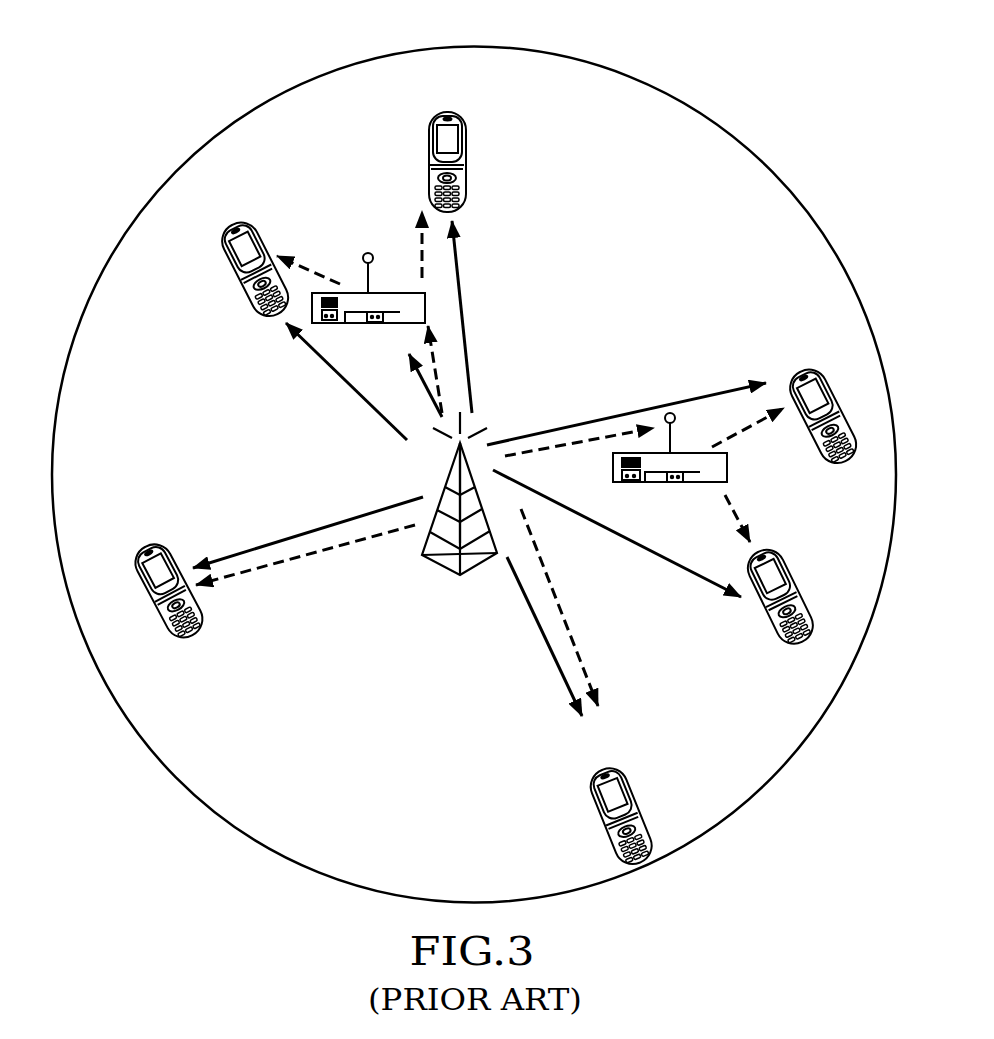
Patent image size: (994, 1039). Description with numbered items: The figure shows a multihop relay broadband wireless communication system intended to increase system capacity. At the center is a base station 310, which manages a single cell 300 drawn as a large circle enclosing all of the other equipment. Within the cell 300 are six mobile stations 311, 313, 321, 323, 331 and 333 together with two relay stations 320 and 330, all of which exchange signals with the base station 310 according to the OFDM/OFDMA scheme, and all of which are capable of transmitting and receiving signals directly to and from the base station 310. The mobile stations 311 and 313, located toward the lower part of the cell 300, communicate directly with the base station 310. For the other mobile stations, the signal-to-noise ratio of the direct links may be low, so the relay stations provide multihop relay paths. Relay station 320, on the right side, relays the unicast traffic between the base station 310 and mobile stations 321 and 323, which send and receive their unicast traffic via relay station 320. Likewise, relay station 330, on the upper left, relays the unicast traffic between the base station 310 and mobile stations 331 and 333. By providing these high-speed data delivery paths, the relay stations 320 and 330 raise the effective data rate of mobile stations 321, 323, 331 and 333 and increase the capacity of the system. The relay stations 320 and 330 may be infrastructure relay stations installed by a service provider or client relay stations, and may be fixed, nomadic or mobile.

The cell 300 is at (474, 475).
The base station 310 is at (458, 512).
The mobile station 311 is at (146, 547).
The mobile station 313 is at (603, 770).
The relay station 320 is at (670, 461).
The mobile station 321 is at (800, 372).
The mobile station 323 is at (757, 551).
The relay station 330 is at (368, 302).
The mobile station 331 is at (233, 222).
The mobile station 333 is at (450, 112).